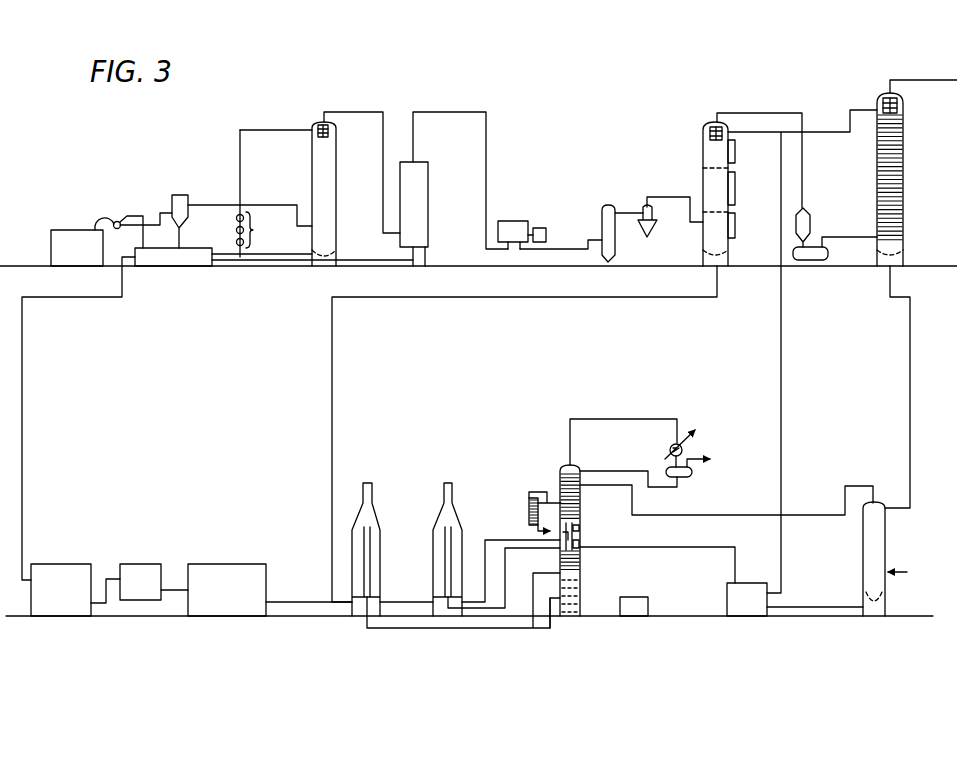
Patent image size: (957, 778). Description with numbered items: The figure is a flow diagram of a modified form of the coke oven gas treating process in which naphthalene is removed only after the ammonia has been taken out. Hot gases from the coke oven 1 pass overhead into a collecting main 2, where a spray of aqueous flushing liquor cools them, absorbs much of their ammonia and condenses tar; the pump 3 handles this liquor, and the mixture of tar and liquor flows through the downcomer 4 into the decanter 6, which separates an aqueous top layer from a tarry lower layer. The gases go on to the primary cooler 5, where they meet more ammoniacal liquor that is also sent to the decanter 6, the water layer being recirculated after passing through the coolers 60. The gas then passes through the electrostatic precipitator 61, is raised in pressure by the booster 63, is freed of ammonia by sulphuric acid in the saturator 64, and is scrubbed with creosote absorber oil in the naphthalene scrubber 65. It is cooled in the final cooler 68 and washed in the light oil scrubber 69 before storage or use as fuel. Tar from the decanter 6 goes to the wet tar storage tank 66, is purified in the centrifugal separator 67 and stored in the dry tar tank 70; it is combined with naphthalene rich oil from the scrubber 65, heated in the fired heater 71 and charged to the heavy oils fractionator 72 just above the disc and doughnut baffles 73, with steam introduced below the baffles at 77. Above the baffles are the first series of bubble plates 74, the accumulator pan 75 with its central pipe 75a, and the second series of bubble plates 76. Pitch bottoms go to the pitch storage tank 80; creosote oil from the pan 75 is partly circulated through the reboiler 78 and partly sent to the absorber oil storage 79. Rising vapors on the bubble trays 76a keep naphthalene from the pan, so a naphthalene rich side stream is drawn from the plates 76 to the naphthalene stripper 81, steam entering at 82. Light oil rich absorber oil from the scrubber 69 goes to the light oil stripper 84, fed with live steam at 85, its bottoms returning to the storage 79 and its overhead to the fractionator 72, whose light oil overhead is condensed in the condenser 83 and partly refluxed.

The coke oven 1 is at (77, 248).
The collecting main 2 is at (98, 226).
The pump 3 is at (117, 221).
The downcomer 4 is at (172, 200).
The primary cooler 5 is at (336, 195).
The decanter 6 is at (183, 248).
The coolers 60 is at (261, 193).
The electrostatic precipitator 61 is at (428, 218).
The booster or pump 63 is at (508, 221).
The saturator 64 is at (628, 276).
The naphthalene scrubber 65 is at (703, 155).
The final cooler 68 is at (810, 228).
The light oil scrubber 69 is at (903, 150).
The wet tar storage tank 66 is at (57, 564).
The centrifugal separator 67 is at (133, 564).
The dry tar storage tank 70 is at (204, 564).
The fired heater 71 is at (380, 567).
The reboiler 78 is at (433, 522).
The heavy oils fractionator 72 is at (588, 555).
The disc and doughnut baffles 73 is at (579, 592).
The first series of bubble plates 74 is at (580, 560).
The accumulator pan 75 is at (580, 547).
The central pipe 75a is at (580, 543).
The second series of bubble plates 76 is at (580, 503).
The bubble trays 76a is at (567, 532).
The steam inlet 77 is at (550, 630).
The absorber oil storage tank 79 is at (727, 600).
The pitch storage tank 80 is at (630, 597).
The naphthalene stripper 81 is at (529, 497).
The steam inlet 82 is at (529, 517).
The condenser 83 is at (688, 425).
The light oil stripper 84 is at (885, 550).
The live steam inlet 85 is at (922, 586).